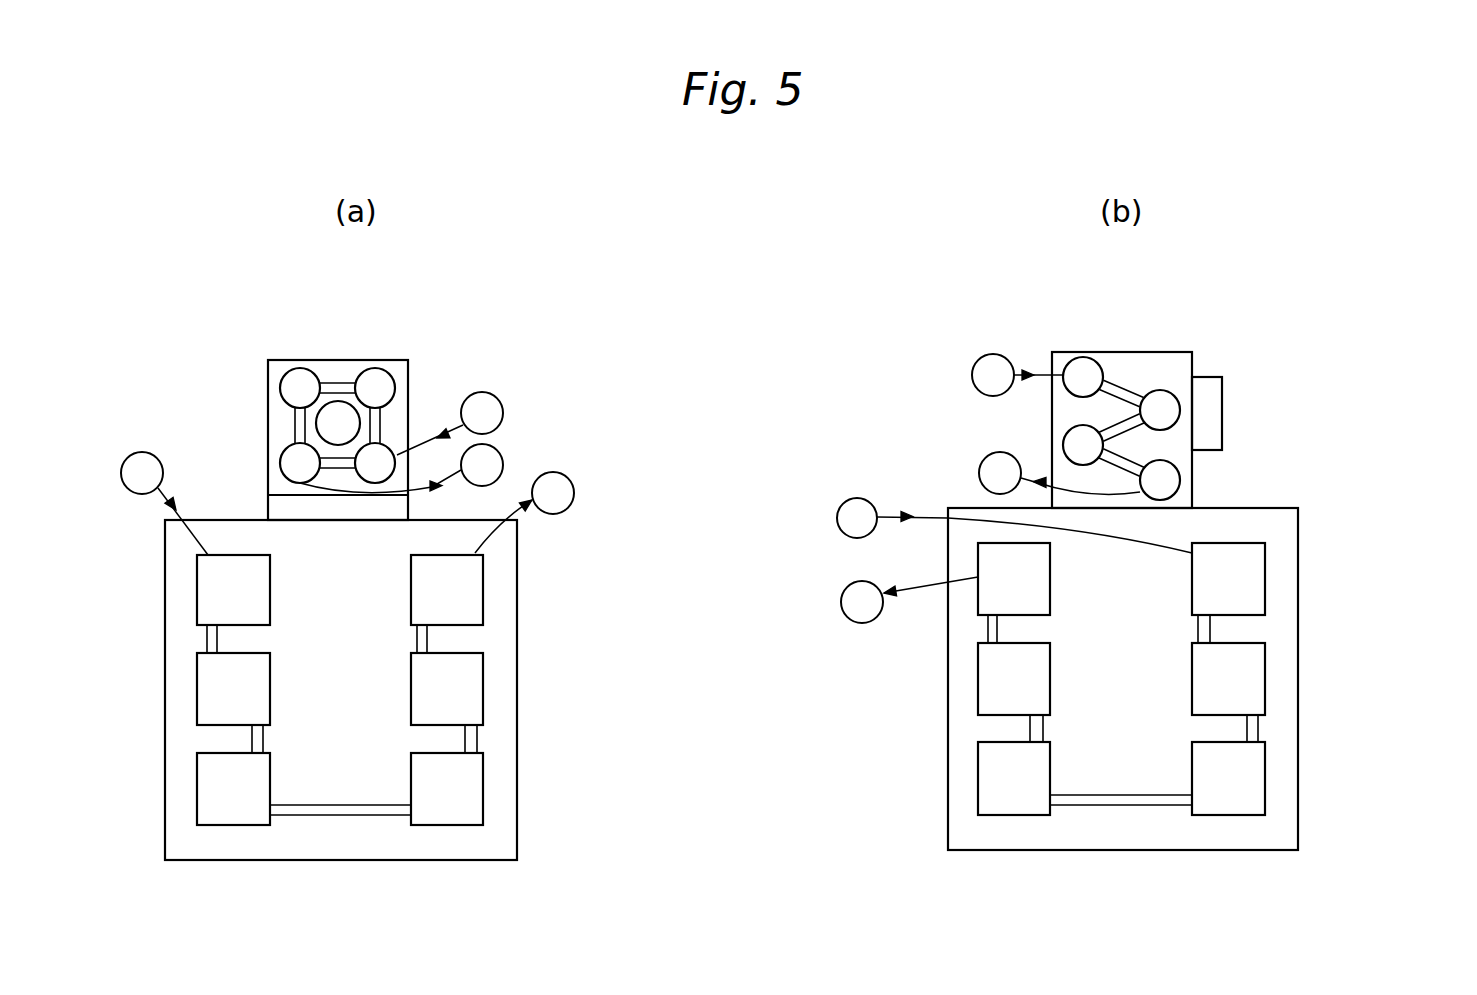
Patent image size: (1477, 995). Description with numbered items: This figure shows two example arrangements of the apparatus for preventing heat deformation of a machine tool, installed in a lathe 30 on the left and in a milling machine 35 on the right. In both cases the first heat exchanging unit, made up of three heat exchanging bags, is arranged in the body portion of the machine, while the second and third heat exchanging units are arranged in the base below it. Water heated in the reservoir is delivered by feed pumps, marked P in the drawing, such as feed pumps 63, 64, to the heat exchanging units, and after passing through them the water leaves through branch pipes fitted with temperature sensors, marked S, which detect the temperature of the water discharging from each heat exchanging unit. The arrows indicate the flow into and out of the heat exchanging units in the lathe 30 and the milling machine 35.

The lathe 30 is at (227, 457).
The milling machine 35 is at (1275, 428).
The feed pump 63 is at (970, 537).
The feed pump 64 is at (837, 527).